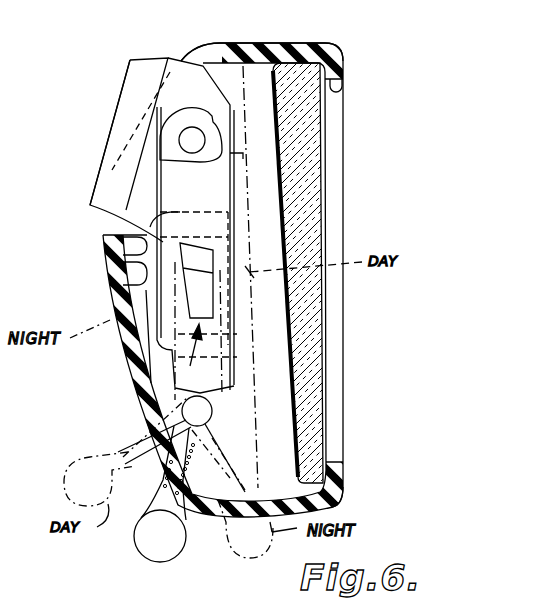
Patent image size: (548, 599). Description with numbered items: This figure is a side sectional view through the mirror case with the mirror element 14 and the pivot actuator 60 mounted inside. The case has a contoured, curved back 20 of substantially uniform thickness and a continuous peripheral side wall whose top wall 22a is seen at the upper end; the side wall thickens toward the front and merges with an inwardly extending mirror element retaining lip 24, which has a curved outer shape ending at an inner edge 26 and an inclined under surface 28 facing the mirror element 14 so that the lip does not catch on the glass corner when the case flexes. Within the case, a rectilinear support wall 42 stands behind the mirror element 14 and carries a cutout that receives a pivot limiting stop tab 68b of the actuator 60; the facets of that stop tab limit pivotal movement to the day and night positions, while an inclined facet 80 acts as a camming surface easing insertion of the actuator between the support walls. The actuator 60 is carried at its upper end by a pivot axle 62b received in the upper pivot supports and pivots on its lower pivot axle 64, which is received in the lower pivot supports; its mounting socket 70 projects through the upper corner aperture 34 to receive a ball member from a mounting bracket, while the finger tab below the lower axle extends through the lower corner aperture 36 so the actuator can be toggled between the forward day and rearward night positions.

The mirror element 14 is at (308, 183).
The case back 20 is at (107, 283).
The top wall 22a is at (264, 43).
The mirror element retaining lip 24 is at (332, 48).
The inner edge 26 is at (343, 90).
The inclined under surface 28 is at (315, 475).
The upper corner aperture 34 is at (231, 60).
The lower corner aperture 36 is at (140, 432).
The support wall 42 is at (140, 377).
The pivot actuator 60 is at (148, 82).
The pivot cam 62b is at (168, 163).
The lower pivot axle 64 is at (200, 409).
The pivot limiting stop tab 68b is at (207, 354).
The mounting socket 70 is at (142, 62).
The inclined facet 80 is at (172, 242).